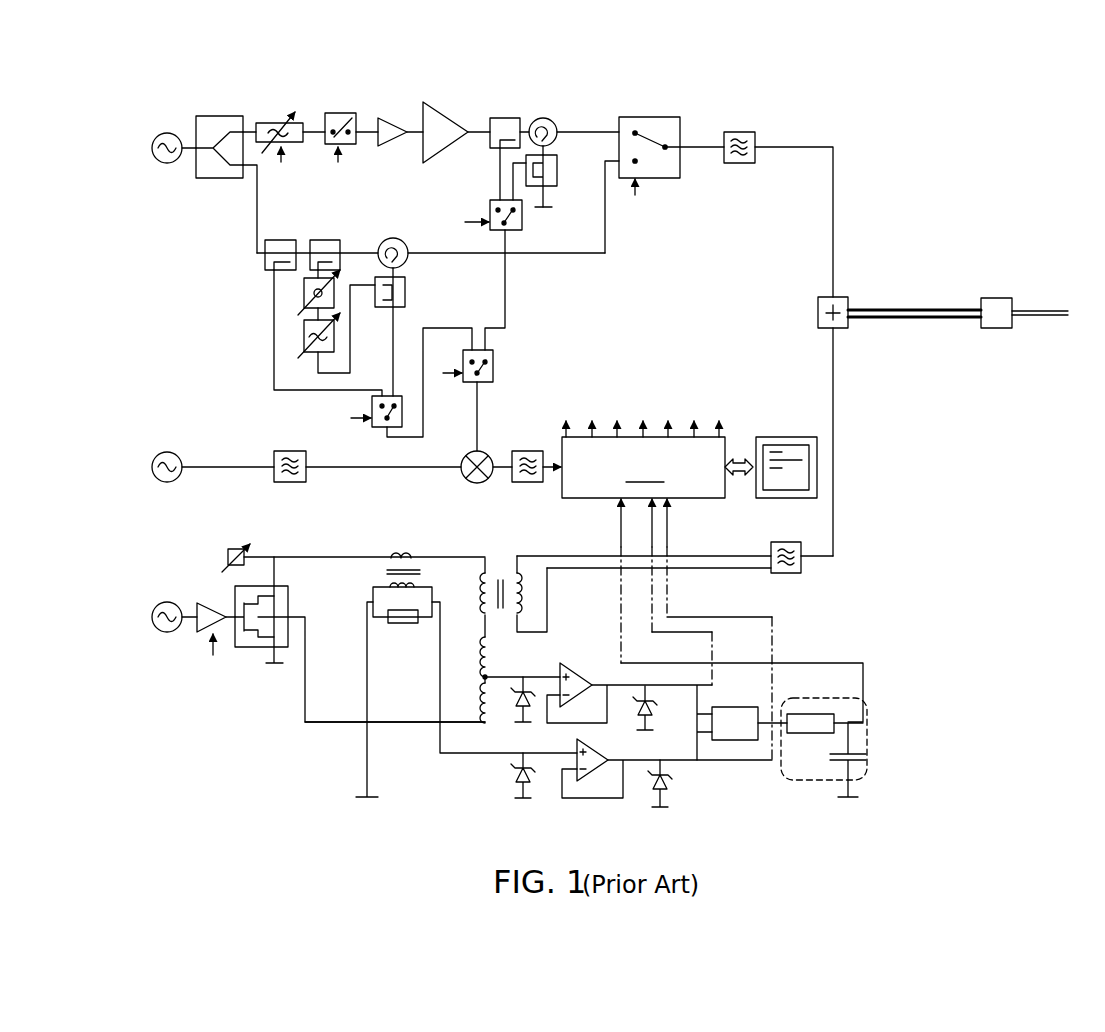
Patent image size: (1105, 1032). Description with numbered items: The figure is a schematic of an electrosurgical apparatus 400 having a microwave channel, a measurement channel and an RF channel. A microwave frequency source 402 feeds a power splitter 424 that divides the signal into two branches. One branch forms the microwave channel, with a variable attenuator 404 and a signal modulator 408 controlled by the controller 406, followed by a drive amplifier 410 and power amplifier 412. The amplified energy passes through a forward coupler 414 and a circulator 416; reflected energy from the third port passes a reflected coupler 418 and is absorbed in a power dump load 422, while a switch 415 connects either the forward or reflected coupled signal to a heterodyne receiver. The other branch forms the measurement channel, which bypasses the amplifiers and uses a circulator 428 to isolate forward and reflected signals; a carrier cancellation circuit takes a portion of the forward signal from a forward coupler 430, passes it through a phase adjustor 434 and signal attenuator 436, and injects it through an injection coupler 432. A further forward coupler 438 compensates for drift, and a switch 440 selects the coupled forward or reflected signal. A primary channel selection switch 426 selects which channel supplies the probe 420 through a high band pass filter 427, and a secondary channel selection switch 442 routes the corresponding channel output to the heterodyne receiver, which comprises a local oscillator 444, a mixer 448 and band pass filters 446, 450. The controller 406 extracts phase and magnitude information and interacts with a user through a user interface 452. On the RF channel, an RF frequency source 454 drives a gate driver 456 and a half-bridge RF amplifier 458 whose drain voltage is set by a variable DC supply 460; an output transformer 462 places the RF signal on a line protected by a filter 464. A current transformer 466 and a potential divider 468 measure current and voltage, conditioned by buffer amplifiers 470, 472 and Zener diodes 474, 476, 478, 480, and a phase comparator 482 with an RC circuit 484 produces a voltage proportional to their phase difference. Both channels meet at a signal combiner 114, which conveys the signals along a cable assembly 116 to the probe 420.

The electrosurgical apparatus 400 is at (1024, 158).
The microwave frequency source 402 is at (166, 133).
The variable attenuator 404 is at (278, 117).
The controller 406 is at (722, 578).
The signal modulator 408 is at (342, 113).
The drive amplifier 410 is at (395, 117).
The power amplifier 412 is at (452, 116).
The forward coupler 414 is at (505, 118).
The switch 415 is at (490, 205).
The circulator 416 is at (548, 118).
The reflected coupler 418 is at (558, 170).
The probe 420 is at (998, 298).
The power dump load 422 is at (552, 208).
The power splitter 424 is at (221, 116).
The primary channel selection switch 426 is at (656, 117).
The high band pass filter 427 is at (740, 132).
The circulator 428 is at (396, 238).
The forward coupler 430 is at (330, 240).
The injection coupler 432 is at (405, 290).
The phase adjustor 434 is at (304, 296).
The signal attenuator 436 is at (304, 338).
The forward coupler 438 is at (284, 240).
The switch 440 is at (400, 396).
The secondary channel selection switch 442 is at (493, 363).
The local oscillator 444 is at (165, 452).
The band pass filter 446 is at (290, 482).
The mixer 448 is at (467, 480).
The band pass filter 450 is at (527, 482).
The user interface 452 is at (780, 437).
The RF frequency source 454 is at (165, 602).
The gate driver 456 is at (215, 632).
The RF amplifier 458 is at (292, 596).
The variable DC supply 460 is at (230, 549).
The output transformer 462 is at (478, 575).
The filter 464 is at (790, 573).
The current transformer 466 is at (395, 572).
The potential divider 468 is at (491, 658).
The buffer amplifier 470 is at (590, 653).
The buffer amplifier 472 is at (590, 776).
The voltage clamping Zener diode 474 is at (518, 702).
The voltage clamping Zener diode 476 is at (655, 716).
The voltage clamping Zener diode 478 is at (515, 790).
The voltage clamping Zener diode 480 is at (668, 793).
The phase comparator 482 is at (742, 694).
The RC circuit 484 is at (867, 740).
The signal combiner 114 is at (846, 297).
The cable assembly 116 is at (916, 308).